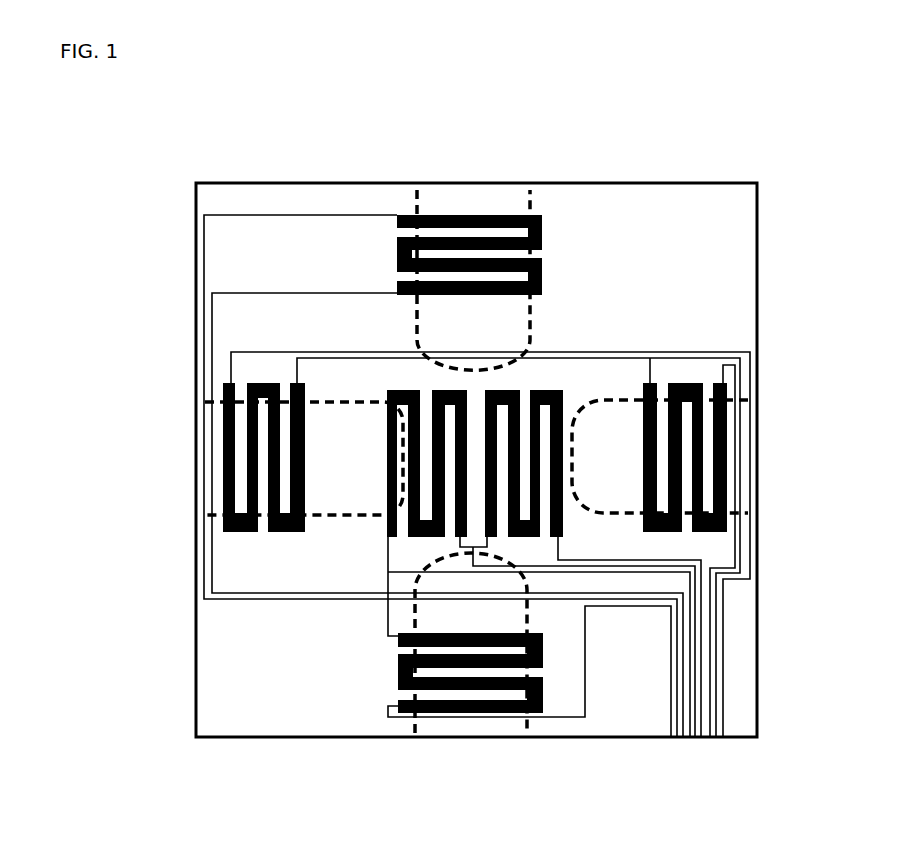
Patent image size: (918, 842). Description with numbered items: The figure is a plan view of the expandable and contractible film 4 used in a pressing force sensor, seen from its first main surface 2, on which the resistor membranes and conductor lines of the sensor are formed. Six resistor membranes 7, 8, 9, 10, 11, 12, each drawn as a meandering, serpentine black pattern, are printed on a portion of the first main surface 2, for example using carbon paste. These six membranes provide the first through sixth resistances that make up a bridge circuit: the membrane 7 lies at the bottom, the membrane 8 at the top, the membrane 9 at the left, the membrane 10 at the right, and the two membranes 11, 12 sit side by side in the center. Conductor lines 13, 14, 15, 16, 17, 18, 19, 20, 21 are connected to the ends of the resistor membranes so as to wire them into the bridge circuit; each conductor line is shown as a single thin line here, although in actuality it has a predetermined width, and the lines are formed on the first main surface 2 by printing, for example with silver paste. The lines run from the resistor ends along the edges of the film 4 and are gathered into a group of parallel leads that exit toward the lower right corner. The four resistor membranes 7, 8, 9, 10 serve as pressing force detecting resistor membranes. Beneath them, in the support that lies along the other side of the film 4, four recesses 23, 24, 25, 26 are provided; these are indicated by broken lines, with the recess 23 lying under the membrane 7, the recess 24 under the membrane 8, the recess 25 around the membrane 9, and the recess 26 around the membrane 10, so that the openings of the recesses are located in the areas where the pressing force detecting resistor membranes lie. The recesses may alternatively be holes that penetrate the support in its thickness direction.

The first main surface 2 is at (700, 263).
The film 4 is at (202, 181).
The resistor membrane 7 is at (471, 713).
The resistor membrane 8 is at (459, 215).
The resistor membrane 9 is at (223, 457).
The resistor membrane 10 is at (727, 447).
The resistor membrane 11 is at (397, 390).
The resistor membrane 12 is at (562, 390).
The conductor line 13 is at (556, 718).
The conductor line 14 is at (273, 603).
The conductor line 15 is at (260, 293).
The conductor line 16 is at (723, 615).
The conductor line 17 is at (702, 353).
The conductor line 18 is at (737, 532).
The conductor line 19 is at (390, 560).
The conductor line 20 is at (627, 567).
The conductor line 21 is at (703, 648).
The recess 23 is at (412, 722).
The recess 24 is at (530, 196).
The recess 25 is at (345, 400).
The recess 26 is at (605, 400).